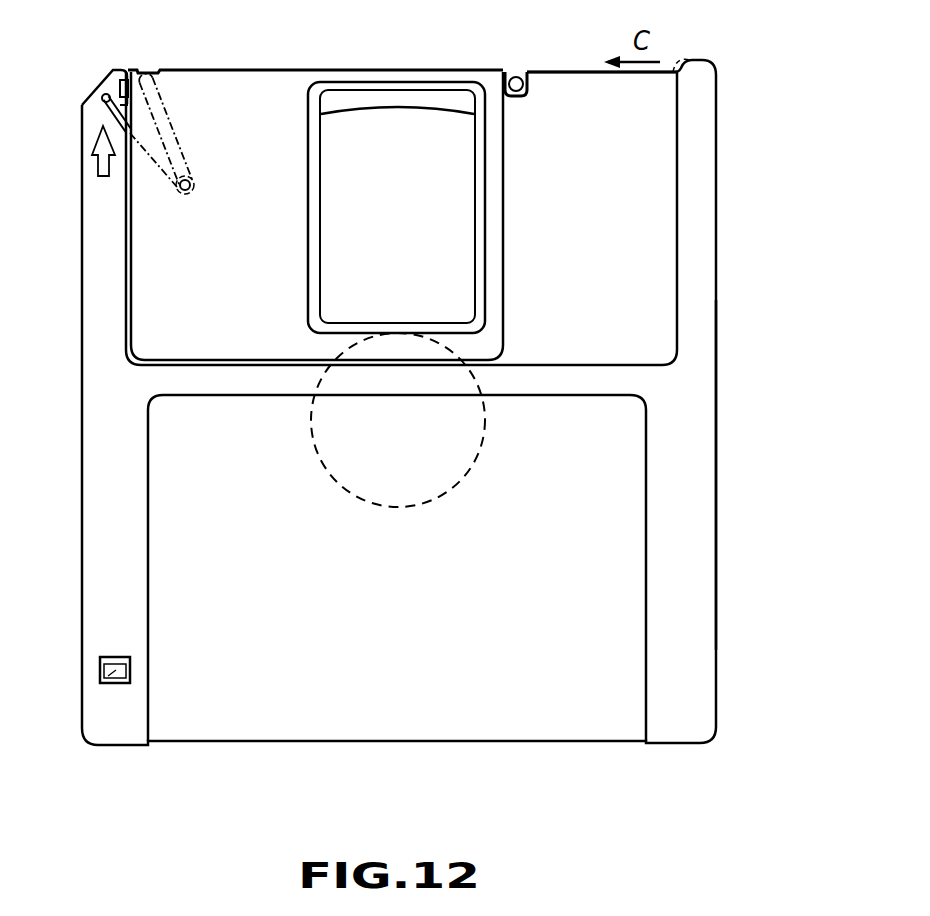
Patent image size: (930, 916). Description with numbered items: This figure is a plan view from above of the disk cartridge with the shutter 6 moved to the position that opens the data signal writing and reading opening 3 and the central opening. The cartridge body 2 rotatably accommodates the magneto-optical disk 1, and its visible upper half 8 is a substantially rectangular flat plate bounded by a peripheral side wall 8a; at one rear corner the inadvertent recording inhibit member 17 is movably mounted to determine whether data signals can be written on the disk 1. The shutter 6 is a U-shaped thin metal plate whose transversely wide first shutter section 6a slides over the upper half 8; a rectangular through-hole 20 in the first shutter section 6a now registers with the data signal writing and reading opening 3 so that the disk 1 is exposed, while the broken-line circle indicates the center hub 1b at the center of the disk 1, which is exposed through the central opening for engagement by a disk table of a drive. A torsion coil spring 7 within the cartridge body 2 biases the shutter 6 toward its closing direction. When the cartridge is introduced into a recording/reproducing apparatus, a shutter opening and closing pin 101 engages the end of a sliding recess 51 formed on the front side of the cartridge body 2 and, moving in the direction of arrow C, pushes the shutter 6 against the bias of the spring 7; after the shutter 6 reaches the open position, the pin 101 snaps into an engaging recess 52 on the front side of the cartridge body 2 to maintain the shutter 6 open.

The magneto-optical disk 1 is at (401, 112).
The center hub 1b is at (480, 445).
The cartridge body 2 is at (716, 606).
The data signal writing and reading opening 3 is at (332, 216).
The shutter 6 is at (296, 70).
The first shutter section 6a is at (230, 70).
The torsion coil spring 7 is at (157, 87).
The upper half 8 is at (716, 482).
The inner wall 8a is at (676, 260).
The inadvertent recording inhibit member 17 is at (100, 680).
The rectangular through-hole 20 is at (320, 162).
The sliding recess 51 is at (573, 72).
The engaging recess 52 is at (522, 92).
The shutter opening and closing pin 101 is at (515, 76).